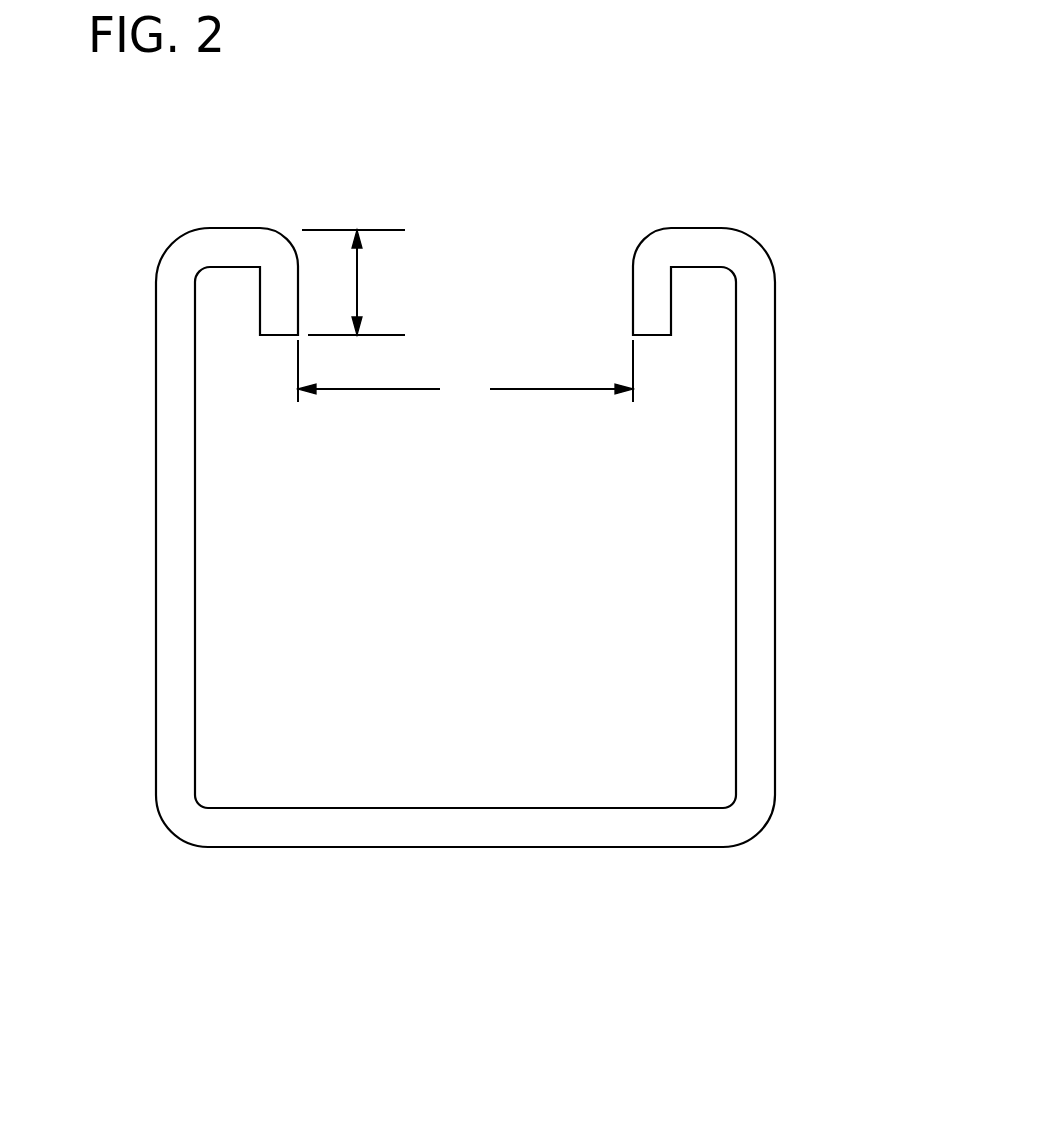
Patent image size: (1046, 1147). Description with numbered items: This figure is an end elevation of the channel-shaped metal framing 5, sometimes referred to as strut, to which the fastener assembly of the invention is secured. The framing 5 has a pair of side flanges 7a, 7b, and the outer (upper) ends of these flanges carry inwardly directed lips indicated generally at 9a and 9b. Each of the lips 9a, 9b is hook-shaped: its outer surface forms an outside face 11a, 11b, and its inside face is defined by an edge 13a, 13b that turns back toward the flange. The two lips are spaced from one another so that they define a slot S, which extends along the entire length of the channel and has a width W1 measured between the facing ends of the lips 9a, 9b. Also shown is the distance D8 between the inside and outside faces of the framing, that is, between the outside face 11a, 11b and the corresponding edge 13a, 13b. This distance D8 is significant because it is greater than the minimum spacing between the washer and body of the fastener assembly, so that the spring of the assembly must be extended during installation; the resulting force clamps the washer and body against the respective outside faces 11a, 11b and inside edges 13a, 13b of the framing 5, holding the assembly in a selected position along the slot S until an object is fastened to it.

The metal framing 5 is at (377, 847).
The side flange 7a is at (155, 545).
The side flange 7b is at (776, 555).
The inwardly directed lip 9a is at (292, 232).
The inwardly directed lip 9b is at (639, 232).
The outside face 11a is at (232, 228).
The outside face 11b is at (696, 228).
The edge 13a is at (282, 337).
The edge 13b is at (650, 337).
The distance D8 is at (357, 283).
The width W1 is at (465, 375).
The slot S is at (477, 311).